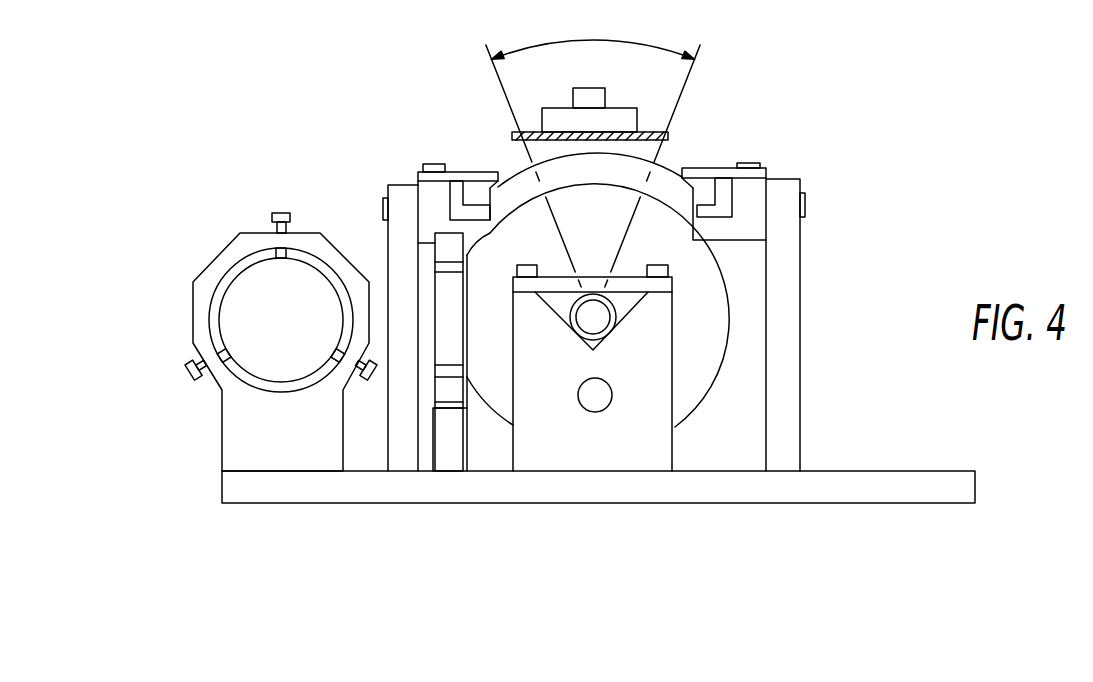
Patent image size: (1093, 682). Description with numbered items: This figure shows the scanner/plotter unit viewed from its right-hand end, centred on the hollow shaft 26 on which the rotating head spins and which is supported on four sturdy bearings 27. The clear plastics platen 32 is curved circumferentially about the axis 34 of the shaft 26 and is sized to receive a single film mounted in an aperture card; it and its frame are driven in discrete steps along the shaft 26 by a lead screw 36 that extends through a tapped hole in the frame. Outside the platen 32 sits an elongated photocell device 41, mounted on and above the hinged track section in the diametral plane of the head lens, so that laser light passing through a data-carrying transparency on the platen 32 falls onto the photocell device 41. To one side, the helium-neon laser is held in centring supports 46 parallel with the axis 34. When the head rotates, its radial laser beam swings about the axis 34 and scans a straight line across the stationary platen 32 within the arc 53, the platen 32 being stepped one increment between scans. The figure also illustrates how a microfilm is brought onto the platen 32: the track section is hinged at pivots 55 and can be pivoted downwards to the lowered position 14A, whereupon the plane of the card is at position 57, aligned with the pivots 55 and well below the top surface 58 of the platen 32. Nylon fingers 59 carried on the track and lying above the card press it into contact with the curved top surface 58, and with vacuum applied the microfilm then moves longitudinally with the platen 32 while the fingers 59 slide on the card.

The lowered position of track section 14A is at (733, 212).
The hollow shaft 26 is at (612, 325).
The bearings 27 is at (668, 460).
The platen 32 is at (667, 163).
The axis of the shaft 34 is at (592, 318).
The lead screw 36 is at (600, 407).
The photocell device 41 is at (648, 132).
The centring supports 46 is at (198, 298).
The arc 53 is at (593, 150).
The pivots 55 is at (807, 202).
The position of card plane 57 is at (720, 178).
The top surface of the platen 58 is at (520, 176).
The nylon fingers 59 is at (492, 172).